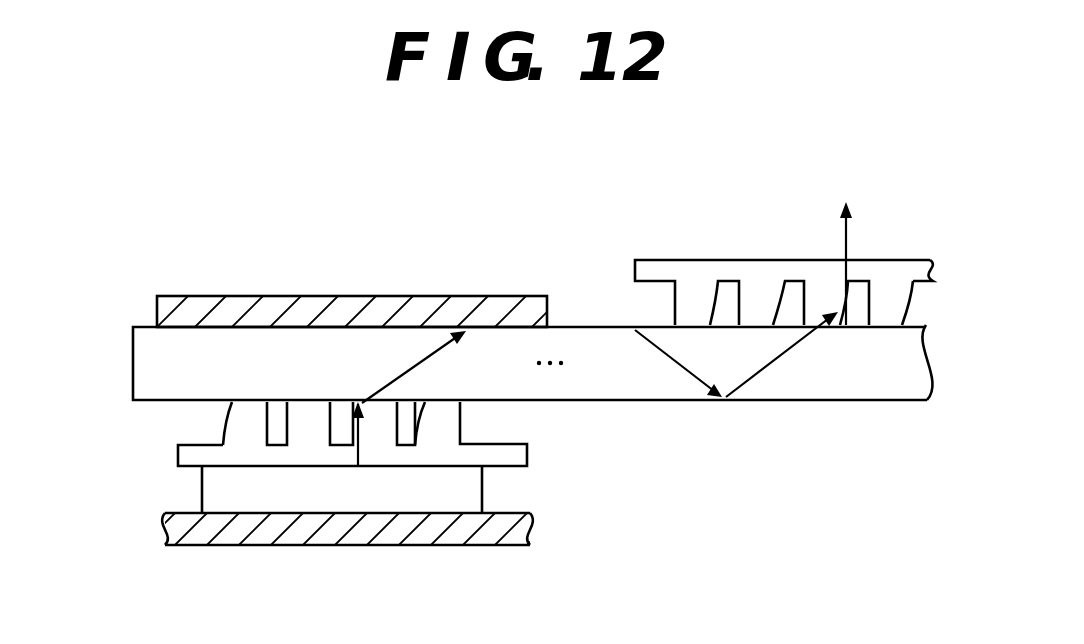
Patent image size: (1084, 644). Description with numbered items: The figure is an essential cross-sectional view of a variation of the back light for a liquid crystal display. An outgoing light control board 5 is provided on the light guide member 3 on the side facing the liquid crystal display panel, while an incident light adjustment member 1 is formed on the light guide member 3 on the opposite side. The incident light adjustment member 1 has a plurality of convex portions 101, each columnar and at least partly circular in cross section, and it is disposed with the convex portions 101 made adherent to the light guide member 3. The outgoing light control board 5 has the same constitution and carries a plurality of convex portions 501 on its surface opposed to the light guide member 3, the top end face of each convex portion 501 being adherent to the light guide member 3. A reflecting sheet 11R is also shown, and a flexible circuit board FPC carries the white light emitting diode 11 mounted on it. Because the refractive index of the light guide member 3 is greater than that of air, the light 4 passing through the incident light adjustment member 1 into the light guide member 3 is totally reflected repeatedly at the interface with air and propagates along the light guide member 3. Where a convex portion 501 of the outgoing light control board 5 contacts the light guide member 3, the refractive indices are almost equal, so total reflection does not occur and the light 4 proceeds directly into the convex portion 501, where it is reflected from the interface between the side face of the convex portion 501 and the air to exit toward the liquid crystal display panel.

The incident light adjustment member 1 is at (500, 455).
The convex portion 101 is at (215, 422).
The light guide member 3 is at (180, 370).
The light 4 is at (612, 320).
The outgoing light control board 5 is at (685, 268).
The convex portion 501 is at (900, 268).
The white light emitting diode 11 is at (278, 500).
The reflecting sheet 11R is at (365, 307).
The flexible circuit board FPC is at (398, 528).